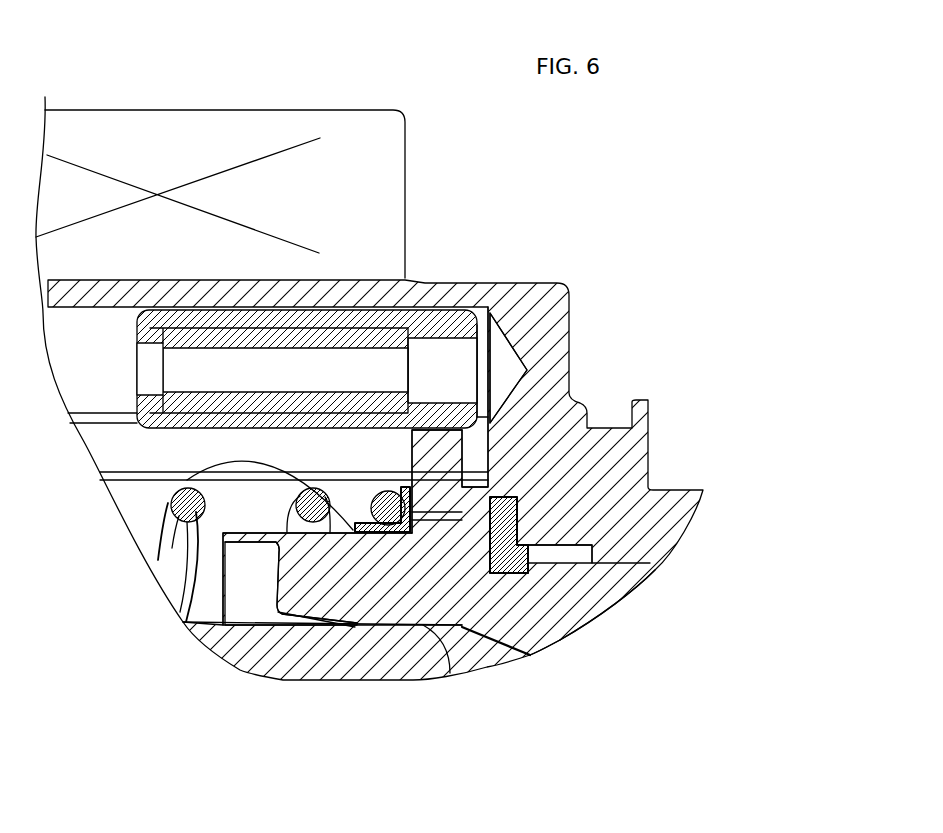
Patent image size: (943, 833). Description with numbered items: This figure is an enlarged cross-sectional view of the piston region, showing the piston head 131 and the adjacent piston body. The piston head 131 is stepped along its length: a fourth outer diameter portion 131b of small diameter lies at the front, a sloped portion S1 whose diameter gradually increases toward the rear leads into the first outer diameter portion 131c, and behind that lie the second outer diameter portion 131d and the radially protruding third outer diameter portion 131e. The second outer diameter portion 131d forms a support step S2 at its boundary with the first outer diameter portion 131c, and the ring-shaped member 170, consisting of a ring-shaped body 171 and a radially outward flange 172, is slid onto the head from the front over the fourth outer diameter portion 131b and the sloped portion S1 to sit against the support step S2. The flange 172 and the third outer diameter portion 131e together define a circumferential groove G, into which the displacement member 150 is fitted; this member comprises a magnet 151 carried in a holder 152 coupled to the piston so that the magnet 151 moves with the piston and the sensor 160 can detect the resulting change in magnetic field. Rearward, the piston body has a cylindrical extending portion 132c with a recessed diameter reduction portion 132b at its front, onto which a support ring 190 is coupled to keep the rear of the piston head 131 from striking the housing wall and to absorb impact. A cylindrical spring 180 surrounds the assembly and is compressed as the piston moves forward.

The piston head 131 is at (369, 388).
The fourth outer diameter portion 131b is at (223, 540).
The first outer diameter portion 131c is at (322, 628).
The second outer diameter portion 131d is at (492, 578).
The third outer diameter portion 131e is at (485, 470).
The diameter reduction portion 132b is at (548, 605).
The extending portion 132c is at (597, 605).
The displacement member 150 is at (307, 220).
The magnet 151 is at (347, 338).
The holder 152 is at (263, 323).
The sensor 160 is at (203, 128).
The ring-shaped member 170 is at (465, 339).
The ring-shaped body 171 is at (425, 430).
The flange 172 is at (468, 425).
The spring 180 is at (165, 520).
The support ring 190 is at (560, 480).
The sloped portion S1 is at (172, 495).
The support step S2 is at (433, 525).
The groove G is at (515, 572).